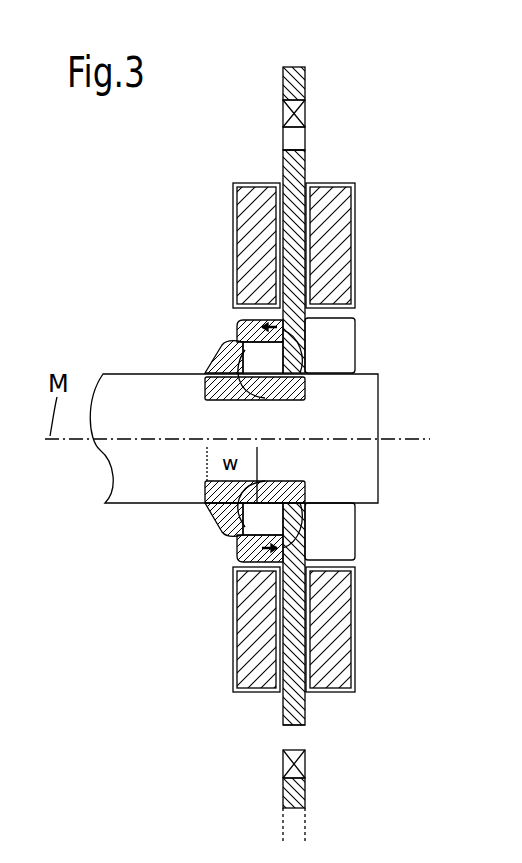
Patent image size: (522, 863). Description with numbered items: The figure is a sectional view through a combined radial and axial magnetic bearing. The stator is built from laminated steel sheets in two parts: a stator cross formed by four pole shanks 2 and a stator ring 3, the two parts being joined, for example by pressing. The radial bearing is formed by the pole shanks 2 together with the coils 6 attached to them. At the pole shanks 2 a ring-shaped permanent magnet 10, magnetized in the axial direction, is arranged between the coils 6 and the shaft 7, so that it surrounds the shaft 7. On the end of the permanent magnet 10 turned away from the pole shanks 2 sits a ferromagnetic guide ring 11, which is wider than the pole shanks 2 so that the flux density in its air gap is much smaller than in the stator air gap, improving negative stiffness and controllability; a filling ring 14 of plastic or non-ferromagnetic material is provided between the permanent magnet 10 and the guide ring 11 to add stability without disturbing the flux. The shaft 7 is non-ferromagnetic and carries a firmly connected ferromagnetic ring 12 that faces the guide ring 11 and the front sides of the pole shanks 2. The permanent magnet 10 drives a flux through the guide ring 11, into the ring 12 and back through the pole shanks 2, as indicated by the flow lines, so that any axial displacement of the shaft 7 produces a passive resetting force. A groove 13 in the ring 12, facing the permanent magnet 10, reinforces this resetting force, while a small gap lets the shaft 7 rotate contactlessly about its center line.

The pole shanks 2 is at (297, 158).
The stator ring 3 is at (295, 83).
The coils 6 is at (338, 235).
The shaft 7 is at (362, 396).
The permanent magnet 10 is at (237, 324).
The guide ring 11 is at (215, 352).
The ring 12 is at (223, 538).
The groove 13 is at (252, 556).
The filling ring 14 is at (340, 530).